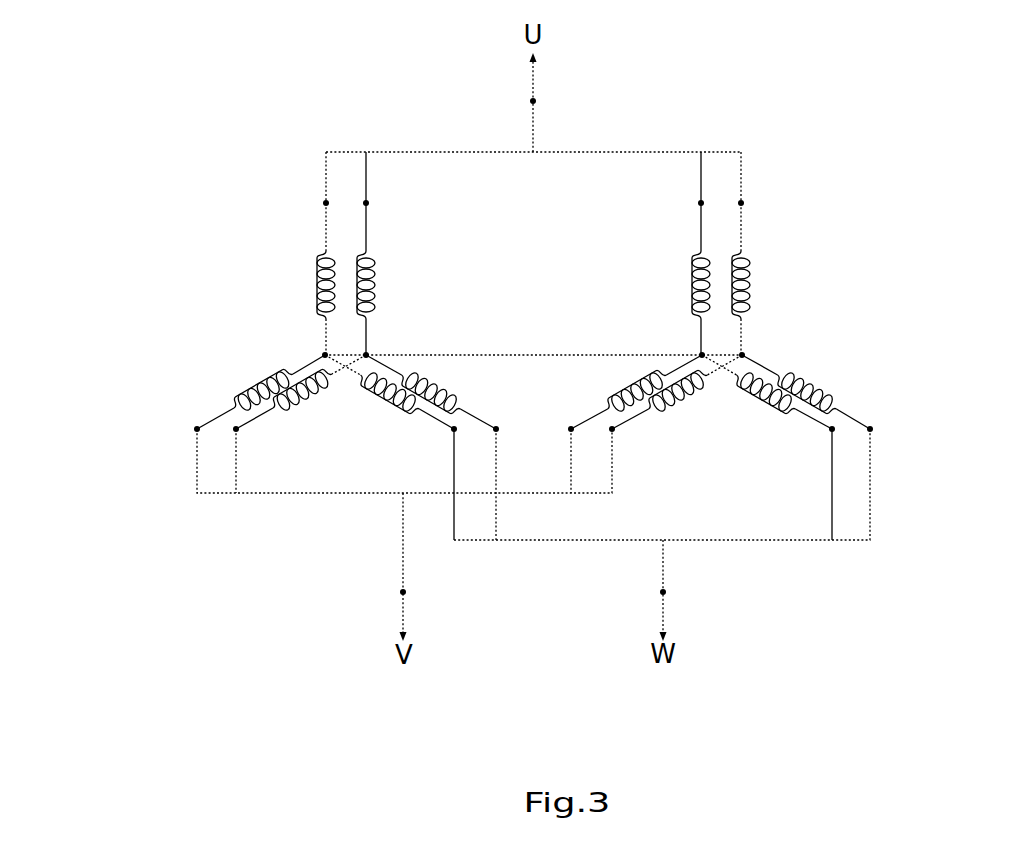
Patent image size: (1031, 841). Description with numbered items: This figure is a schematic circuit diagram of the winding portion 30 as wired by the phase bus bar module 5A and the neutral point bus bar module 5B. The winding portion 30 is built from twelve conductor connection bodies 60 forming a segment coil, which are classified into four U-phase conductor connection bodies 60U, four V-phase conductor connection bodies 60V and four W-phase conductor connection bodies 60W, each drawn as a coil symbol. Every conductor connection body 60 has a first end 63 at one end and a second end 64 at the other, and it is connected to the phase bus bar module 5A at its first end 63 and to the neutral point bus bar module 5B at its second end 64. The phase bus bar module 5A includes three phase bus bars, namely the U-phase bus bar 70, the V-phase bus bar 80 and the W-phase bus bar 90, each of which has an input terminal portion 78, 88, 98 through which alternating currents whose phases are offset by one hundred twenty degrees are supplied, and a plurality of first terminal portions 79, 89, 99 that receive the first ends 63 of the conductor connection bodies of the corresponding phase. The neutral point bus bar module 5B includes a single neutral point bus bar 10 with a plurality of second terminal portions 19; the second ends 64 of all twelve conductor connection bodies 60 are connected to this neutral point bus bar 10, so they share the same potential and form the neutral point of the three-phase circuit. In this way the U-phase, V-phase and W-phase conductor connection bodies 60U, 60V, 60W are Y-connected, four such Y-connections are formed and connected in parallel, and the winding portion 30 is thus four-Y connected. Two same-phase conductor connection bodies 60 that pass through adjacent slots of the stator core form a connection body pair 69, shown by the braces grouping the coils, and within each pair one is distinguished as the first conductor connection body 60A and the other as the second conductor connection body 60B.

The phase bus bar module 5A is at (787, 120).
The neutral point bus bar module 5B is at (559, 350).
The neutral point bus bar 10 is at (591, 350).
The second terminal portion 19 is at (327, 359).
The winding portion 30 is at (903, 305).
The conductor connection body 60 is at (537, 360).
The U-phase conductor connection body 60U is at (362, 257).
The V-phase conductor connection body 60V is at (292, 373).
The W-phase conductor connection body 60W is at (390, 372).
The first conductor connection body 60A is at (363, 315).
The second conductor connection body 60B is at (317, 287).
The first end 63 is at (741, 204).
The second end 64 is at (741, 354).
The connection body pair 69 is at (165, 204).
The U-phase bus bar 70 is at (662, 148).
The input terminal portion 78 is at (536, 101).
The first terminal portion 79 is at (701, 200).
The V-phase bus bar 80 is at (285, 500).
The input terminal portion 88 is at (400, 592).
The first terminal portion 89 is at (236, 431).
The W-phase bus bar 90 is at (788, 548).
The input terminal portion 98 is at (666, 592).
The first terminal portion 99 is at (832, 431).